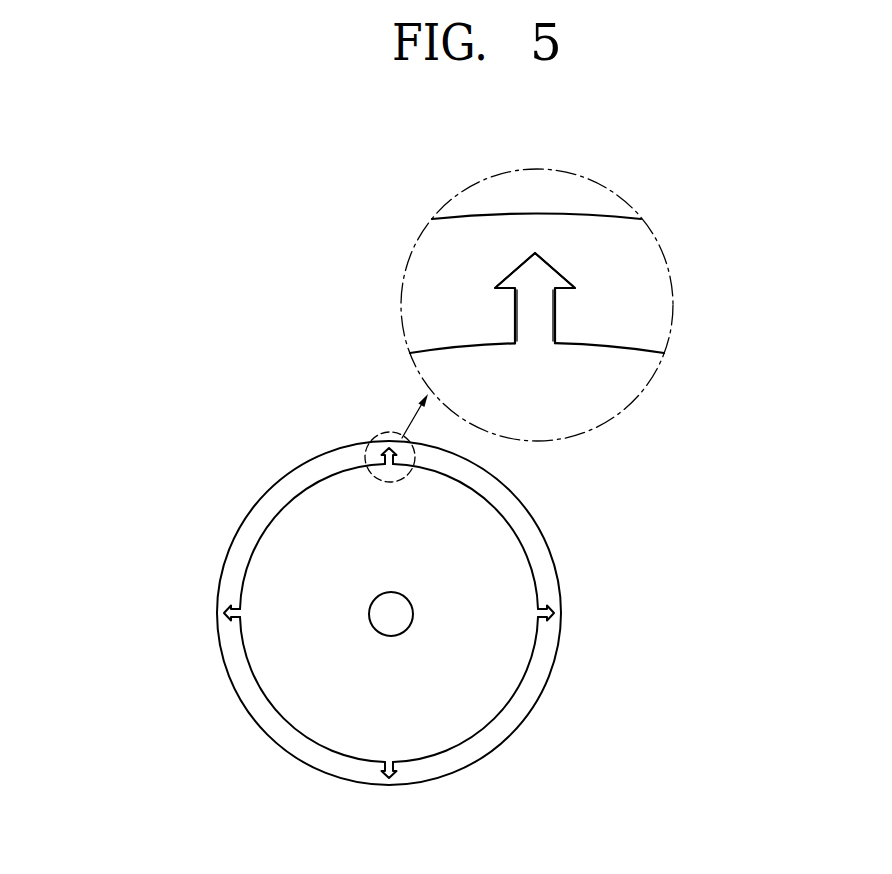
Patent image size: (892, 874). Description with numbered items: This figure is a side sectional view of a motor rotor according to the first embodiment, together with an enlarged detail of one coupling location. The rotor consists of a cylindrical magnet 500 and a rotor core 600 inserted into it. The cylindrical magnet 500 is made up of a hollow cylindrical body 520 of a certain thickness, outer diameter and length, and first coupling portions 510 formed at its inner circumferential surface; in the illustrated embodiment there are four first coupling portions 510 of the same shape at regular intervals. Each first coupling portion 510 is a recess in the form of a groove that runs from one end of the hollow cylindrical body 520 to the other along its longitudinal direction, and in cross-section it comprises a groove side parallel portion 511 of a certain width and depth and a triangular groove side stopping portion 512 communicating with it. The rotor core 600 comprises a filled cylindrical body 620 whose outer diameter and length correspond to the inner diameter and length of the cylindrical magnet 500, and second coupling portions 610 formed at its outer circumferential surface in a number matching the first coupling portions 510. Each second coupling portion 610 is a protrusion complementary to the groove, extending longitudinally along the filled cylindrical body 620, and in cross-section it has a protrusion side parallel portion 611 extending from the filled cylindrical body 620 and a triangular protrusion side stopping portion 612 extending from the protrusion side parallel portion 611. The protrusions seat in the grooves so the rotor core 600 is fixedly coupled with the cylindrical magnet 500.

The cylindrical magnet 500 is at (216, 513).
The first coupling portion 510 is at (701, 133).
The groove side parallel portion 511 is at (560, 309).
The groove side stopping portion 512 is at (571, 286).
The hollow cylindrical body 520 is at (237, 570).
The rotor core 600 is at (337, 592).
The second coupling portion 610 is at (297, 481).
The protrusion side parallel portion 611 is at (534, 276).
The protrusion side stopping portion 612 is at (530, 313).
The filled cylindrical body 620 is at (465, 593).